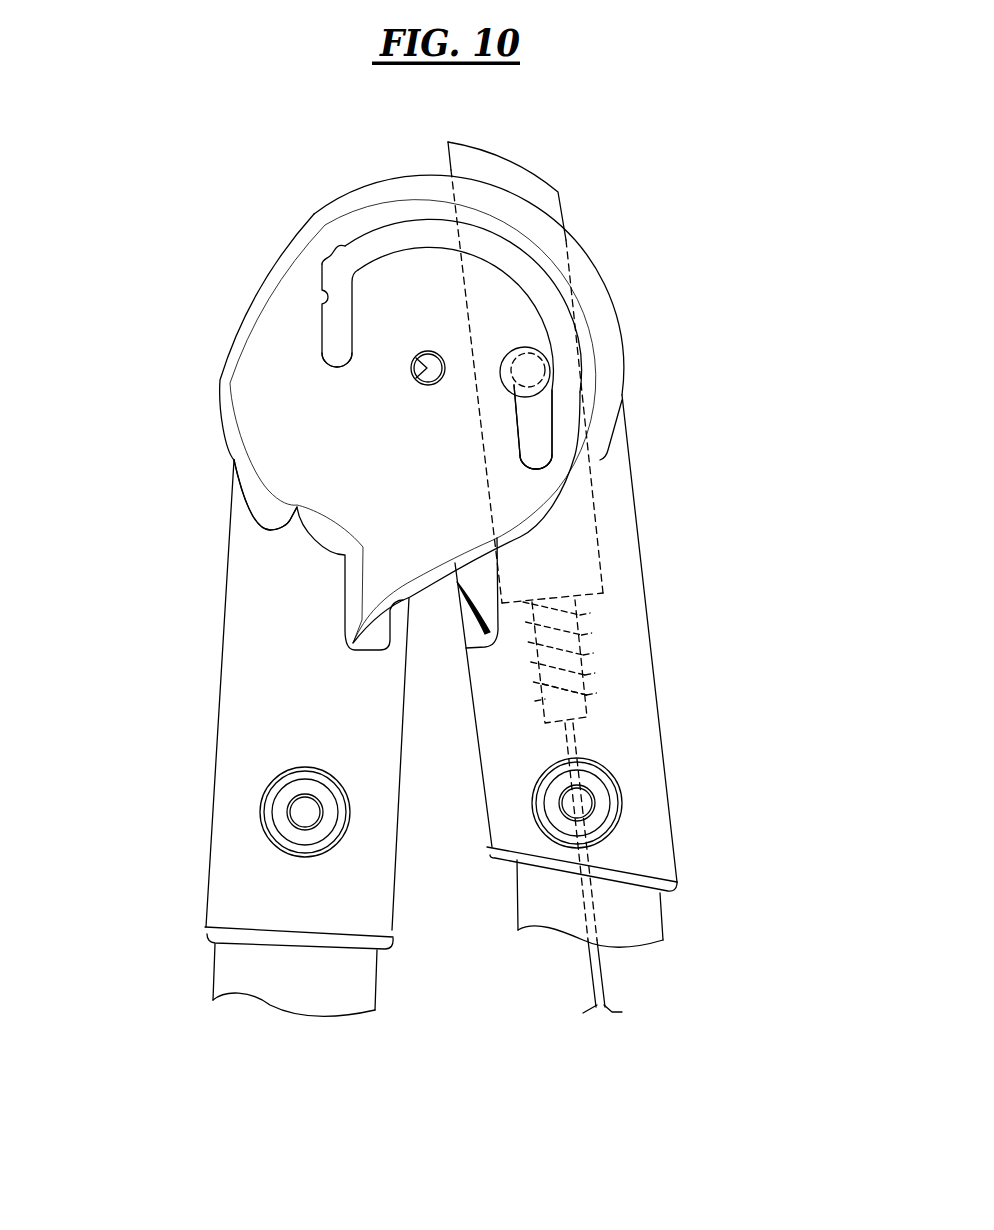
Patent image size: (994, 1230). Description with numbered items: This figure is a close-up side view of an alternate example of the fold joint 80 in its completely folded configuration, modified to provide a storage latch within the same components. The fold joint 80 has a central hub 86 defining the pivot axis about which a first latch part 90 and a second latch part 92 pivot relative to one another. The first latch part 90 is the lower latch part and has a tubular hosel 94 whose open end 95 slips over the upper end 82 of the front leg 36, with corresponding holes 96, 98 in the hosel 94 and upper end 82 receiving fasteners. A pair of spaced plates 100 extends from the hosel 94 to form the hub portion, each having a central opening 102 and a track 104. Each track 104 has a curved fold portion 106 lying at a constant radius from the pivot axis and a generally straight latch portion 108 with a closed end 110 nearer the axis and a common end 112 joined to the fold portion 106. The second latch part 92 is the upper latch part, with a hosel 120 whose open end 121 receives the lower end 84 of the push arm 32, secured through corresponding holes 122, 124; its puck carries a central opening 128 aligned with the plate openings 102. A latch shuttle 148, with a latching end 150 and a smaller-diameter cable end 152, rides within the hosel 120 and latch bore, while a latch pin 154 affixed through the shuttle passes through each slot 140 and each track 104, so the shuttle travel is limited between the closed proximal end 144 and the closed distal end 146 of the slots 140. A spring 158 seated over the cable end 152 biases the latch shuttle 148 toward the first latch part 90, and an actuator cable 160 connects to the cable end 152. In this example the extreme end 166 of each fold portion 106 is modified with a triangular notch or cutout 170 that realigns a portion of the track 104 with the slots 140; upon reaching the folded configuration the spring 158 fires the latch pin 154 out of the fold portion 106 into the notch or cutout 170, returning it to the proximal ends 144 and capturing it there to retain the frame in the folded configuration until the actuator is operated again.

The push arm 32 is at (637, 953).
The front leg 36 is at (247, 997).
The fold joint 80 is at (731, 259).
The upper end of the front leg 82 is at (251, 1006).
The lower end of the push arm 84 is at (630, 948).
The central hub 86 is at (248, 391).
The first latch part 90 is at (292, 743).
The second latch part 92 is at (623, 679).
The hosel 94 is at (232, 703).
The open end 95 is at (350, 957).
The hole 96 is at (367, 826).
The hole 98 is at (320, 826).
The plates 100 is at (313, 450).
The central opening 102 is at (463, 497).
The track 104 is at (371, 299).
The fold portion 106 is at (417, 215).
The latch portion 108 is at (322, 303).
The closed end 110 is at (350, 367).
The common end 112 is at (352, 248).
The hosel 120 is at (642, 722).
The open end 121 is at (522, 868).
The hole 122 is at (662, 803).
The hole 124 is at (590, 787).
The central opening 128 is at (413, 380).
The slot 140 is at (552, 420).
The closed proximal end 144 is at (549, 373).
The closed distal end 146 is at (594, 524).
The latch shuttle 148 is at (597, 547).
The latching end 150 is at (517, 173).
The cable end 152 is at (577, 707).
The latch pin 154 is at (527, 345).
The spring 158 is at (600, 687).
The actuator cable 160 is at (597, 982).
The extreme end 166 is at (550, 477).
The notch or cutout 170 is at (535, 468).